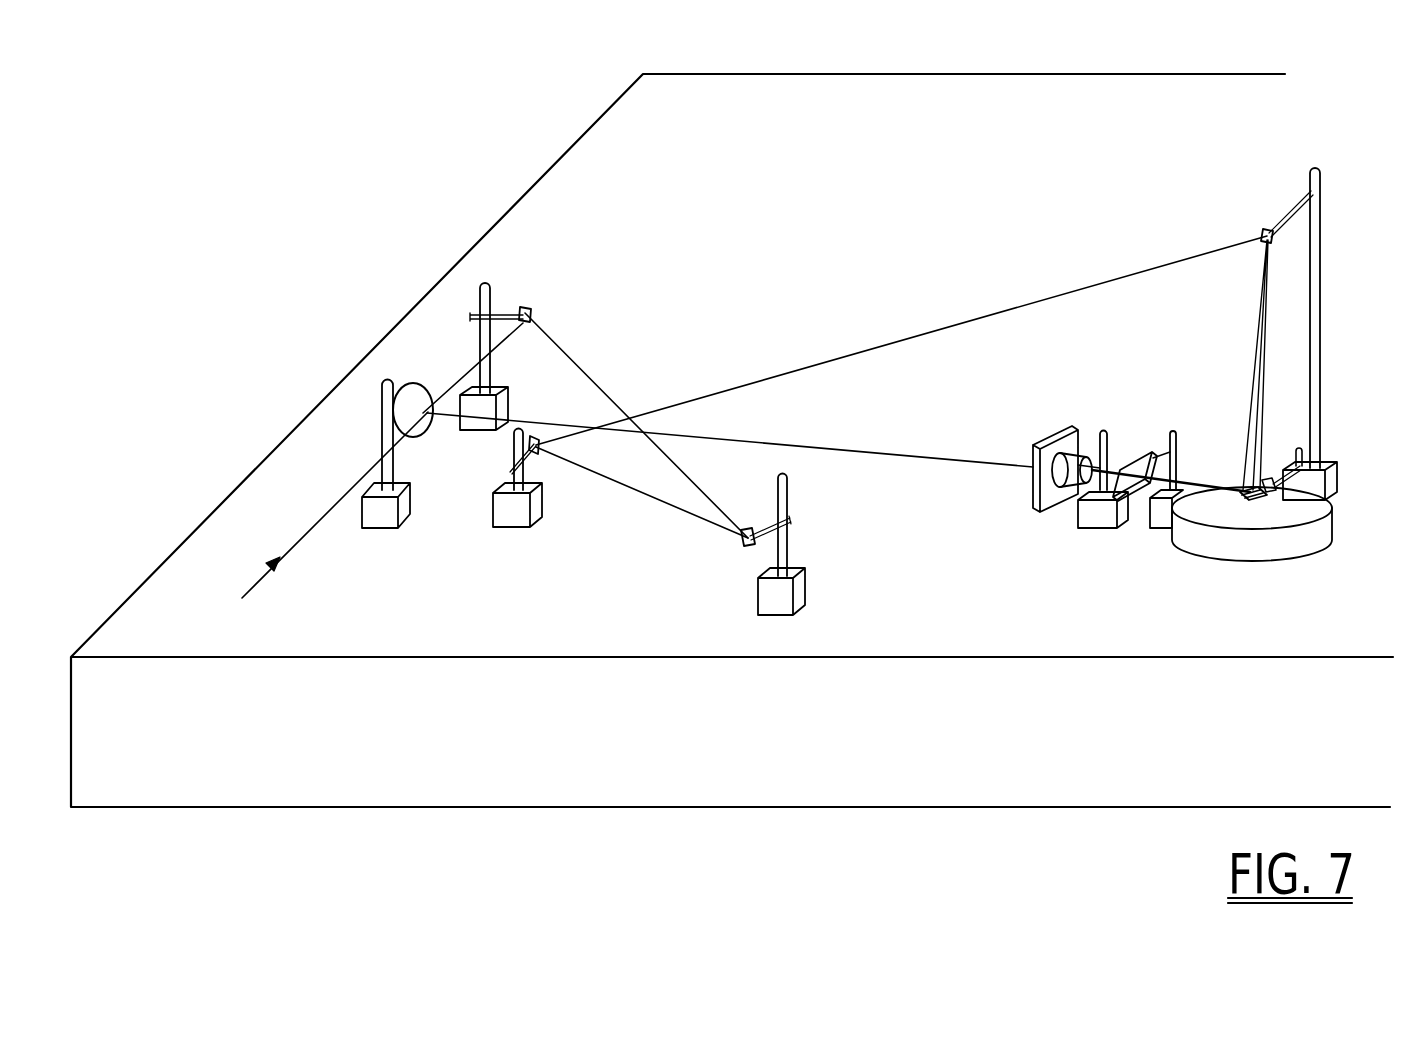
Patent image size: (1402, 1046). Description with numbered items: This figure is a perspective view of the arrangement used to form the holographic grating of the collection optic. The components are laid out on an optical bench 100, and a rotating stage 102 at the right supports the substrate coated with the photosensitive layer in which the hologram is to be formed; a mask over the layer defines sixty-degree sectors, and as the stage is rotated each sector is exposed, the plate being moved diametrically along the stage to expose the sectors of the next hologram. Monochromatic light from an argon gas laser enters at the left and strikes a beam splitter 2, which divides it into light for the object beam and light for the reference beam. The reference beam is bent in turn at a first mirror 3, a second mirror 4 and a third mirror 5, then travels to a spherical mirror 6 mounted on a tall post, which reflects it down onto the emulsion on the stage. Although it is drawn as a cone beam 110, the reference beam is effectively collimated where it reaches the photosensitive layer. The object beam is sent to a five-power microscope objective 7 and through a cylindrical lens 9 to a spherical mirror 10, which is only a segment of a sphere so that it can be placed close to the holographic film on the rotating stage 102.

The optical bench 100 is at (762, 74).
The beam splitter 2 is at (417, 408).
The first mirror 3 is at (529, 309).
The second mirror 4 is at (750, 548).
The third mirror 5 is at (540, 455).
The spherical mirror 6 is at (1266, 228).
The microscope objective 7 is at (1076, 497).
The cylindrical lens 9 is at (1143, 458).
The spherical mirror 10 is at (1323, 509).
The rotating stage 102 is at (1238, 541).
The cone beam 110 is at (1250, 346).